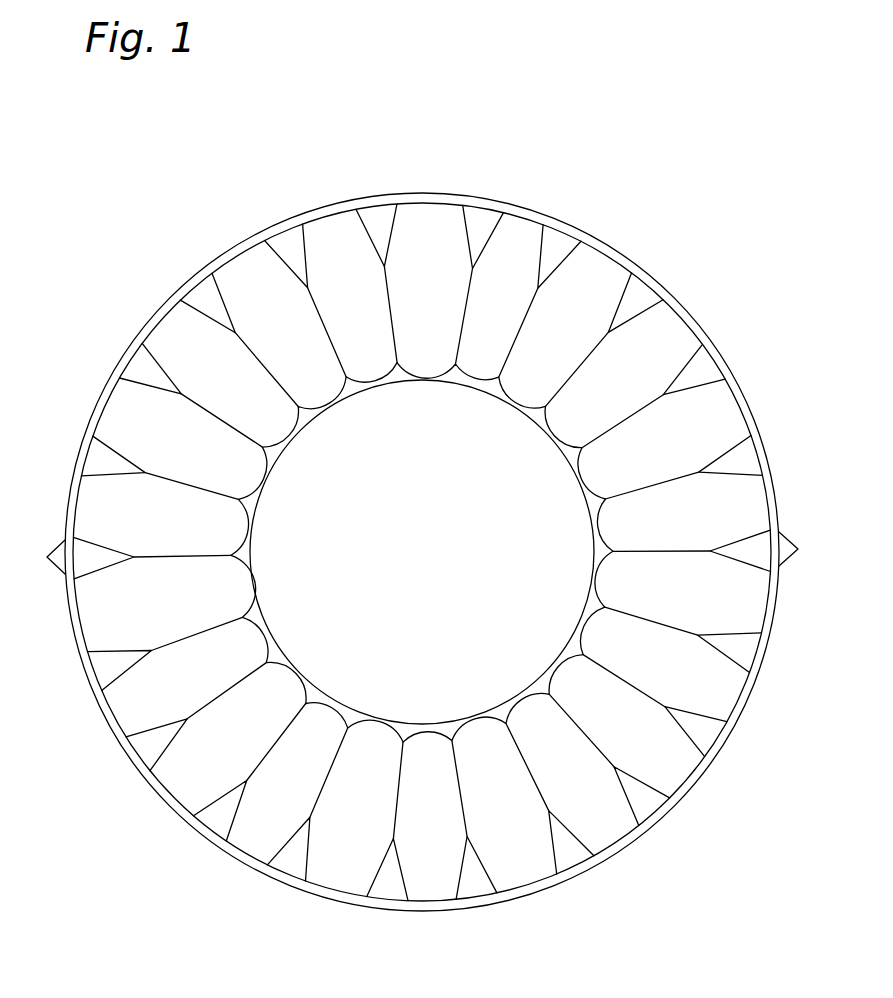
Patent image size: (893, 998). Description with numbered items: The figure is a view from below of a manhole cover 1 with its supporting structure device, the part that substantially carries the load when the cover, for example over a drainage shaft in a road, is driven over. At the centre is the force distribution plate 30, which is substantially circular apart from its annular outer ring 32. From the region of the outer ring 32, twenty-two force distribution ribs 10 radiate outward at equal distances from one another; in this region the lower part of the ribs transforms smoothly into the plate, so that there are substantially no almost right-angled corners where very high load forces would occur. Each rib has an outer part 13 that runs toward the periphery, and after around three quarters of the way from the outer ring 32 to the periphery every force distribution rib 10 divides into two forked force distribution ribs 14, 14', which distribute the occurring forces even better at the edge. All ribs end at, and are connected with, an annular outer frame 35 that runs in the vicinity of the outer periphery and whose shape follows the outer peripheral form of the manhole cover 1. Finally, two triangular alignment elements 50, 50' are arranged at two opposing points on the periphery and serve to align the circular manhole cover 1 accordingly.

The manhole cover 1 is at (587, 155).
The force distribution ribs 10 is at (570, 378).
The outer part 13 is at (584, 349).
The force distribution rib 14 is at (422, 552).
The force distribution rib 14' is at (421, 548).
The force distribution plate 30 is at (437, 560).
The outer ring 32 is at (393, 383).
The outer frame 35 is at (710, 323).
The alignment element 50 is at (800, 519).
The alignment element 50' is at (47, 510).